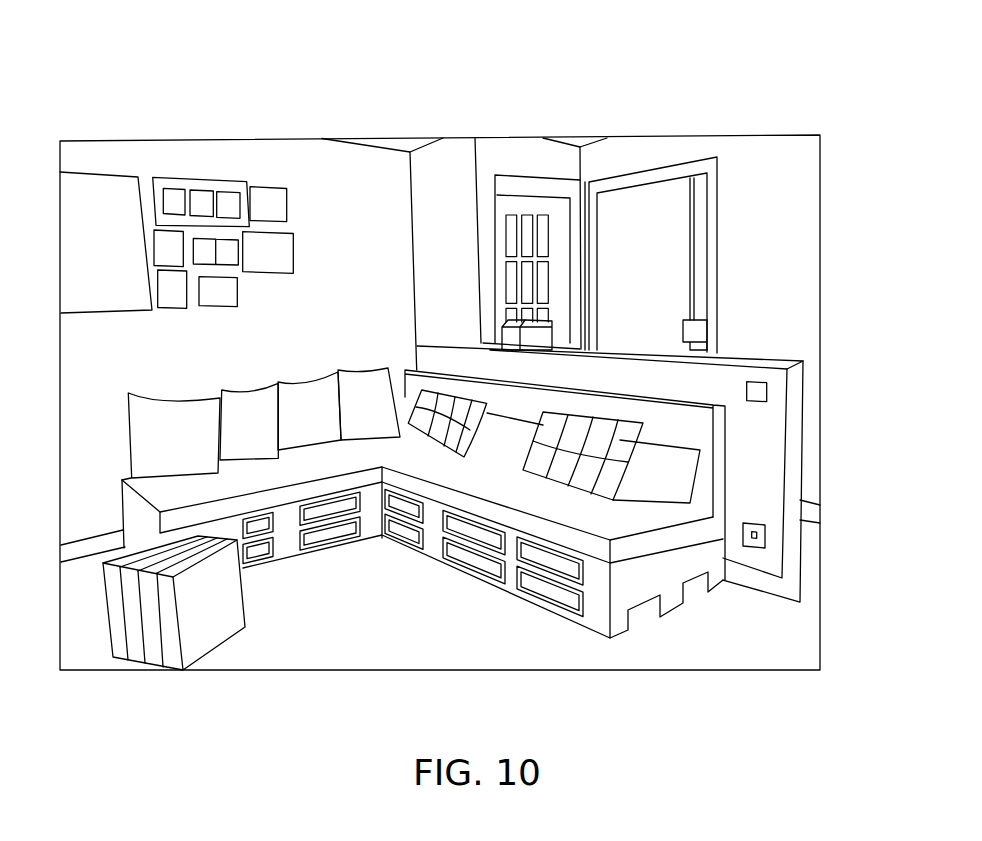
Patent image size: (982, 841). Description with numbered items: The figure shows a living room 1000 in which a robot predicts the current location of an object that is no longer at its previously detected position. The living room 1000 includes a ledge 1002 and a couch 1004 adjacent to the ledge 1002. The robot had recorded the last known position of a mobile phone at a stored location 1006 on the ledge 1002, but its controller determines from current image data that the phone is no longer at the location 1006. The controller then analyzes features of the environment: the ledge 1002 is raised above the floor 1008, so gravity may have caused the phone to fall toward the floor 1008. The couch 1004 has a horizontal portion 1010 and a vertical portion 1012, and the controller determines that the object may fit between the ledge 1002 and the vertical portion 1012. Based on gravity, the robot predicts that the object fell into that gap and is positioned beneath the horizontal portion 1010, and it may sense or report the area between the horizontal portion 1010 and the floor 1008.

The living room 1000 is at (489, 105).
The ledge 1002 is at (748, 360).
The couch 1004 is at (657, 530).
The stored location 1006 is at (668, 358).
The floor 1008 is at (627, 652).
The horizontal portion 1010 is at (632, 543).
The vertical portion 1012 is at (717, 488).